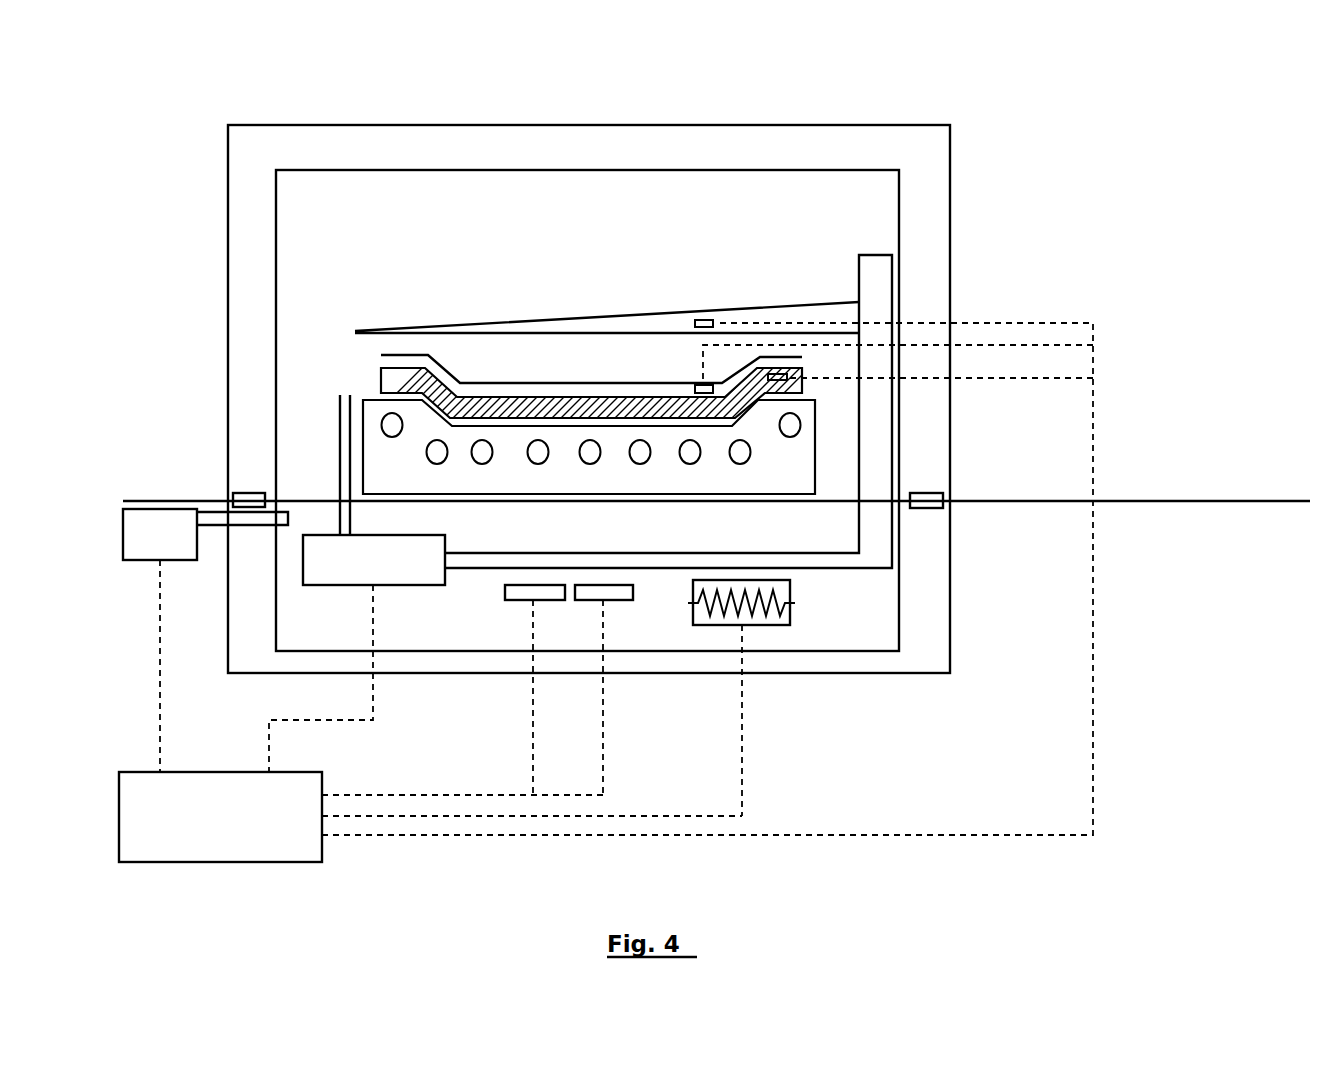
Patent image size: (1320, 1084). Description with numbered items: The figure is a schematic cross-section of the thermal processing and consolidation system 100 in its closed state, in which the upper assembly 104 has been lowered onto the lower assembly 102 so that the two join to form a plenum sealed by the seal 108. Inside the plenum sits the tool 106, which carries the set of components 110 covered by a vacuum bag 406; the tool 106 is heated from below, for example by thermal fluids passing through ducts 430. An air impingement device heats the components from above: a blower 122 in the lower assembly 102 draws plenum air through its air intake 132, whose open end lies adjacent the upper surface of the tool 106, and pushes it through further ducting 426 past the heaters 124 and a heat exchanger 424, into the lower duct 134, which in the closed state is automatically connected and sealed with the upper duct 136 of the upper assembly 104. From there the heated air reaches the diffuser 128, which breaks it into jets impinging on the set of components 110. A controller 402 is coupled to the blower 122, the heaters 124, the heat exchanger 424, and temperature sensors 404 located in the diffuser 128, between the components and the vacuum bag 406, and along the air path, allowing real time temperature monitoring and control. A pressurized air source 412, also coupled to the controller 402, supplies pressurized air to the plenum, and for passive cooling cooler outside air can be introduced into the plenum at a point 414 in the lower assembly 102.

The thermal processing and consolidation system 100 is at (1139, 106).
The lower assembly 102 is at (932, 600).
The upper assembly 104 is at (235, 205).
The tool 106 is at (655, 485).
The seal 108 is at (240, 493).
The set of components 110 is at (378, 380).
The blower 122 is at (448, 552).
The heaters 124 is at (603, 593).
The diffuser 128 is at (790, 299).
The air intake 132 is at (345, 395).
The lower duct 134 is at (877, 535).
The upper duct 136 is at (875, 433).
The controller 402 is at (606, 592).
The temperature sensors 404 is at (695, 320).
The vacuum bag 406 is at (492, 383).
The pressurized air source 412 is at (162, 552).
The point 414 is at (284, 527).
The heat exchanger 424 is at (790, 597).
The further ducting 426 is at (733, 563).
The ducts 430 is at (540, 462).